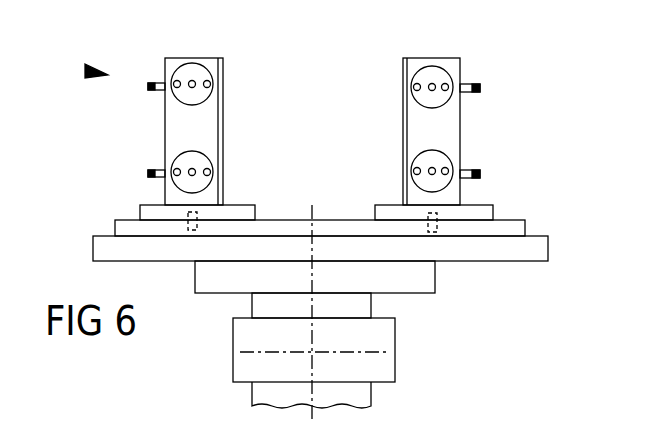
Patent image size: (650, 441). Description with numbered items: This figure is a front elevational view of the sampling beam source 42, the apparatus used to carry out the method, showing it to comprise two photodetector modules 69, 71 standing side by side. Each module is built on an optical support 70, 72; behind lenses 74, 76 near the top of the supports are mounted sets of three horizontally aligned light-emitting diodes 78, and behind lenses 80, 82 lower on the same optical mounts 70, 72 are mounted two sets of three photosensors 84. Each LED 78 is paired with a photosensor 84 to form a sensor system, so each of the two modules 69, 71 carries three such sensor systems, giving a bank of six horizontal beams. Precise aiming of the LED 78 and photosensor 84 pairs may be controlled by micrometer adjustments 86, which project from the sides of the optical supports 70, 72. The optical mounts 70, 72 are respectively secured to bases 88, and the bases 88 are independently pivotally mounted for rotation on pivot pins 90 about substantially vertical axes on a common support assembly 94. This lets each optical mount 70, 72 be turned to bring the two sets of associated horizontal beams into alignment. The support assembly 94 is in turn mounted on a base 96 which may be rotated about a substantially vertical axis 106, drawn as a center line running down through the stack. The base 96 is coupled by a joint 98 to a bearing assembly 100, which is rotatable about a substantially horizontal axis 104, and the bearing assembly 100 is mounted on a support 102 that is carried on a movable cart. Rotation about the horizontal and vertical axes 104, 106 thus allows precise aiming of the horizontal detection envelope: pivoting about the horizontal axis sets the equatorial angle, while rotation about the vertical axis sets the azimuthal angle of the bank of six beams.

The sampling beam source 42 is at (88, 70).
The photodetector module 69 is at (224, 95).
The optical support 70 is at (175, 112).
The photodetector module 71 is at (462, 115).
The optical support 72 is at (407, 116).
The lens 74 is at (218, 63).
The lens 76 is at (455, 75).
The light-emitting diodes 78 is at (207, 80).
The lens 80 is at (214, 160).
The lens 82 is at (452, 157).
The photosensors 84 is at (192, 168).
The micrometer adjustments 86 is at (147, 84).
The bases 88 is at (248, 205).
The pivot pins 90 is at (186, 213).
The support assembly 94 is at (168, 237).
The base 96 is at (435, 282).
The joint 98 is at (371, 308).
The bearing assembly 100 is at (395, 365).
The support 102 is at (371, 400).
The horizontal axis 104 is at (255, 355).
The vertical axis 106 is at (310, 250).